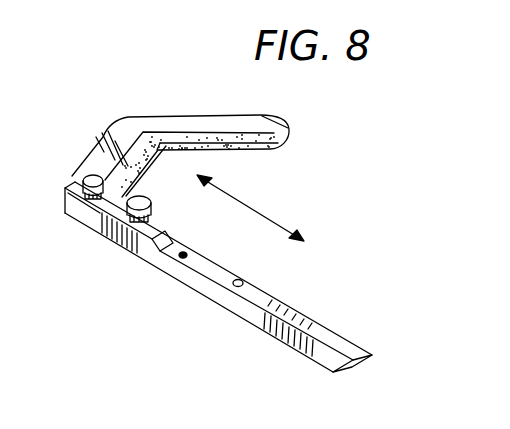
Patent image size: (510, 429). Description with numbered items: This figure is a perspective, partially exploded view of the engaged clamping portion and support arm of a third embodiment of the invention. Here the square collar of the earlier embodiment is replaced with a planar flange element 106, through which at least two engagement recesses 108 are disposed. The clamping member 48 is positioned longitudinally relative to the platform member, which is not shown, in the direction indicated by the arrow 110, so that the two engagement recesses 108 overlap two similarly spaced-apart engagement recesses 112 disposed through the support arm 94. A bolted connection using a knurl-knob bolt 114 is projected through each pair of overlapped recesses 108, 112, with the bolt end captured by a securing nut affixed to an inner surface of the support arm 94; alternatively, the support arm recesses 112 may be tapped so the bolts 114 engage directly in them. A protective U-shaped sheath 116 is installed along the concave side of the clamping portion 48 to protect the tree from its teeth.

The clamping member 48 is at (104, 140).
The support arm 94 is at (340, 313).
The planar flange element 106 is at (106, 214).
The engagement recesses 108 is at (149, 218).
The arrow 110 is at (307, 203).
The engagement recesses 112 is at (233, 283).
The knurl-knob bolt 114 is at (83, 184).
The protective U-shaped sheath 116 is at (257, 156).